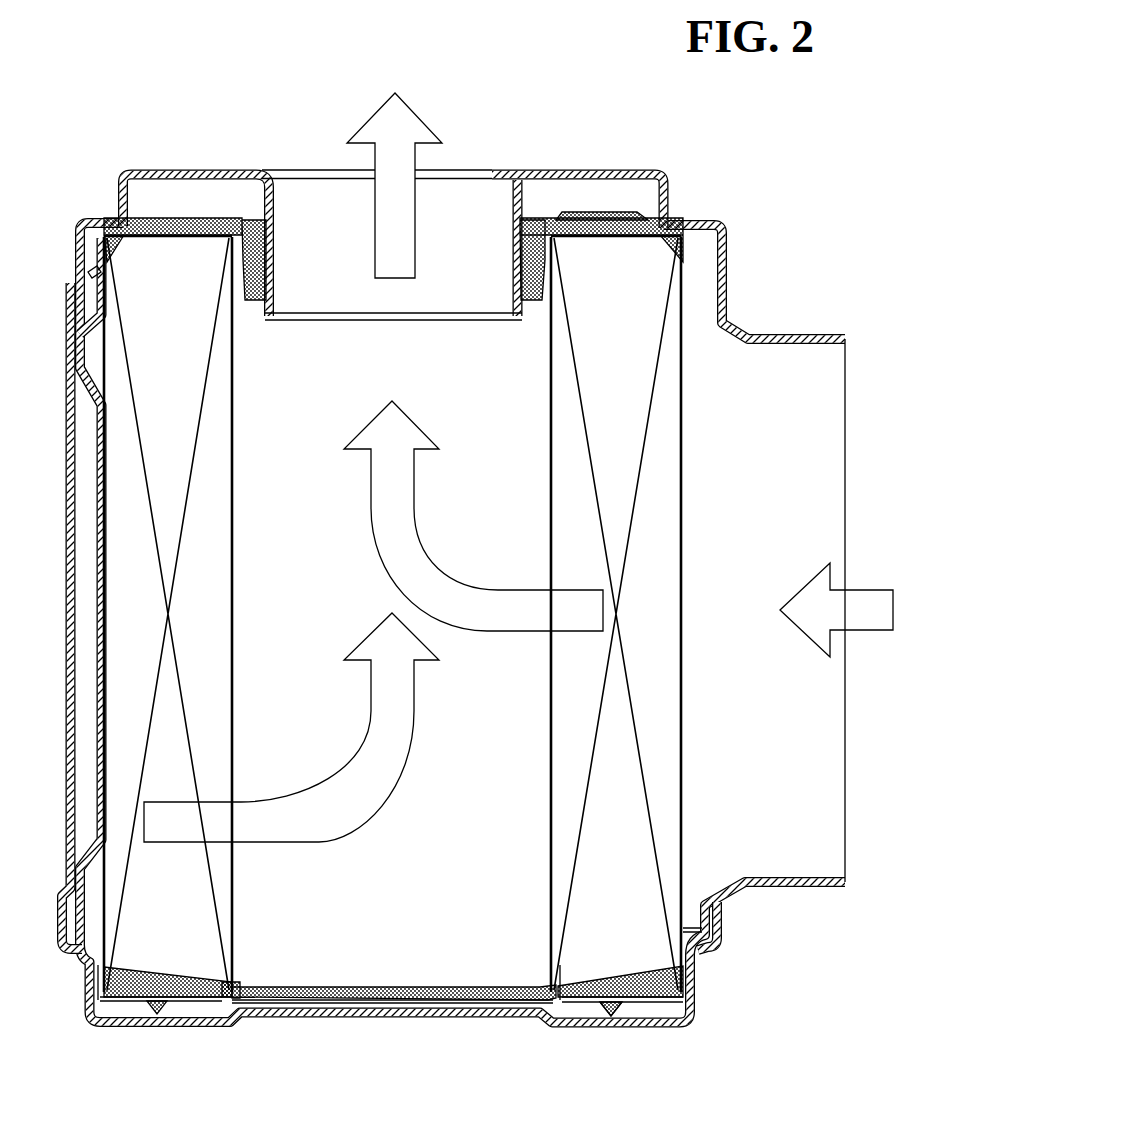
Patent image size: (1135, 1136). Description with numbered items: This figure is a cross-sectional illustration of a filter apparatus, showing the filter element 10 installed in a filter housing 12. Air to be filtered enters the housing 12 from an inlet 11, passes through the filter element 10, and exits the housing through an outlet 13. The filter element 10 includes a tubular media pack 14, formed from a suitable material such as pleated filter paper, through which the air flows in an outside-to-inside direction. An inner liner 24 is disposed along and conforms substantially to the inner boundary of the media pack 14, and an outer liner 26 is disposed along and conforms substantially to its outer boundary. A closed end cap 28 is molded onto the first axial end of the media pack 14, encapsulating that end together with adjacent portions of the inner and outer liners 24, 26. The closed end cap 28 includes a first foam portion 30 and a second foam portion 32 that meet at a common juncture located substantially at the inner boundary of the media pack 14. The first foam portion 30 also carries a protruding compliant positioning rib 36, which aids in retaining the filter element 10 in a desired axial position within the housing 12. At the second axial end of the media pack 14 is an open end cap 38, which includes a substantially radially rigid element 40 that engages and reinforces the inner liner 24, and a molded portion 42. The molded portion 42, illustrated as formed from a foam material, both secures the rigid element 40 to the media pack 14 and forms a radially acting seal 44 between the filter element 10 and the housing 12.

The filter element 10 is at (445, 568).
The inlet 11 is at (852, 545).
The filter housing 12 is at (728, 297).
The outlet 13 is at (463, 162).
The media pack 14 is at (654, 785).
The inner liner 24 is at (548, 706).
The outer liner 26 is at (684, 705).
The closed end cap 28 is at (390, 985).
The first foam portion 30 is at (128, 998).
The second foam portion 32 is at (372, 1003).
The positioning rib 36 is at (157, 1012).
The open end cap 38 is at (150, 213).
The rigid element 40 is at (534, 216).
The molded portion 42 is at (642, 220).
The radial seal 44 is at (513, 257).